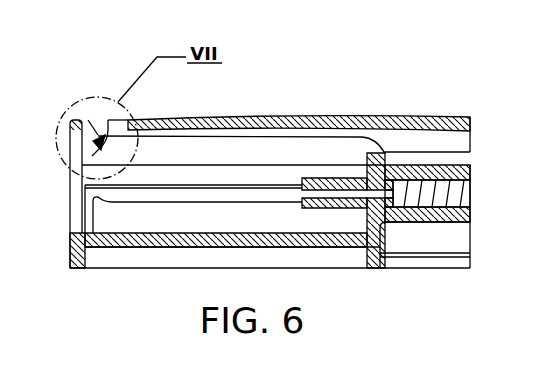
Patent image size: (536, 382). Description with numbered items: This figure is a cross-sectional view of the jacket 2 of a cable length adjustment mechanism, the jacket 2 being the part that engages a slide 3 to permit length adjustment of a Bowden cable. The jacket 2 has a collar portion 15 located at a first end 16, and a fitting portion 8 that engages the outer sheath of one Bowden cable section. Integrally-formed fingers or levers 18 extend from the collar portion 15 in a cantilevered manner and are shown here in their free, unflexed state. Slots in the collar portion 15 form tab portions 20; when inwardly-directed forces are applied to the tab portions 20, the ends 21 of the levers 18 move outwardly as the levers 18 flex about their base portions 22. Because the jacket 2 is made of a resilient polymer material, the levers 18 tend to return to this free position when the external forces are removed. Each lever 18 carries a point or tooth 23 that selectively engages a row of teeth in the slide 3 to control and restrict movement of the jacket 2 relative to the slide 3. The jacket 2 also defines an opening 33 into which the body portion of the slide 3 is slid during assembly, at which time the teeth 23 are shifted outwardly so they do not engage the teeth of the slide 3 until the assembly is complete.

The jacket 2 is at (443, 115).
The slide 3 is at (192, 241).
The fitting portion 8 is at (473, 226).
The collar portion 15 is at (458, 121).
The first end 16 is at (474, 264).
The levers 18 is at (233, 116).
The tab portions 20 is at (412, 118).
The ends 21 is at (117, 100).
The base portions 22 is at (383, 118).
The tooth 23 is at (90, 156).
The opening 33 is at (76, 218).